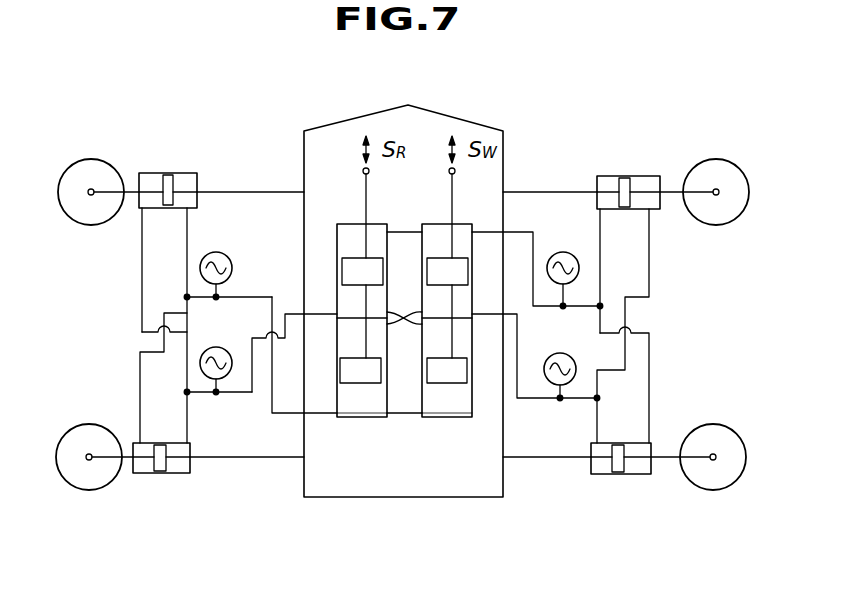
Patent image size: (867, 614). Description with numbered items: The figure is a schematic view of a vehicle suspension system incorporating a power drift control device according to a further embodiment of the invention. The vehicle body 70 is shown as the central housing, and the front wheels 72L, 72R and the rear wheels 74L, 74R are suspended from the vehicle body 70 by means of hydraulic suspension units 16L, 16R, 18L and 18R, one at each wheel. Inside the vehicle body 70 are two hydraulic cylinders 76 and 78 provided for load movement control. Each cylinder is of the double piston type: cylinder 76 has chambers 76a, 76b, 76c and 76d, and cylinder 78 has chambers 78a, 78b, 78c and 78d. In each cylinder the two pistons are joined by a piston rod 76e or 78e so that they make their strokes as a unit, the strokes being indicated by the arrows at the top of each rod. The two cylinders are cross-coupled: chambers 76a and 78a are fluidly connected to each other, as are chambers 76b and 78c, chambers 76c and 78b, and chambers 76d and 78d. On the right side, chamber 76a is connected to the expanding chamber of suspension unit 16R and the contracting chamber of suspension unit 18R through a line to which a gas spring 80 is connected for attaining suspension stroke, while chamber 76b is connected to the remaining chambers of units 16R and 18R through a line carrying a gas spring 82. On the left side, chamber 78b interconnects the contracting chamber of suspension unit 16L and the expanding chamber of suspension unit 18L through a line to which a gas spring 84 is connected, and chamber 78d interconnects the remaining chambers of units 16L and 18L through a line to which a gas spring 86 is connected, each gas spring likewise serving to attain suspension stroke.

The vehicle body 70 is at (442, 497).
The hydraulic cylinder 76 is at (472, 342).
The chamber 76a is at (462, 232).
The chamber 76b is at (473, 291).
The chamber 76c is at (465, 345).
The chamber 76d is at (452, 408).
The piston rod 76e is at (450, 193).
The hydraulic cylinder 78 is at (309, 331).
The chamber 78a is at (342, 238).
The chamber 78b is at (340, 293).
The chamber 78c is at (347, 338).
The chamber 78d is at (338, 397).
The piston rod 78e is at (365, 187).
The gas spring 80 is at (563, 252).
The gas spring 82 is at (556, 353).
The gas spring 84 is at (217, 347).
The gas spring 86 is at (216, 252).
The hydraulic suspension unit 16L is at (168, 173).
The hydraulic suspension unit 16R is at (605, 176).
The hydraulic suspension unit 18L is at (167, 474).
The hydraulic suspension unit 18R is at (596, 474).
The front wheel 72L is at (82, 157).
The front wheel 72R is at (700, 160).
The rear wheel 74L is at (102, 488).
The rear wheel 74R is at (686, 482).